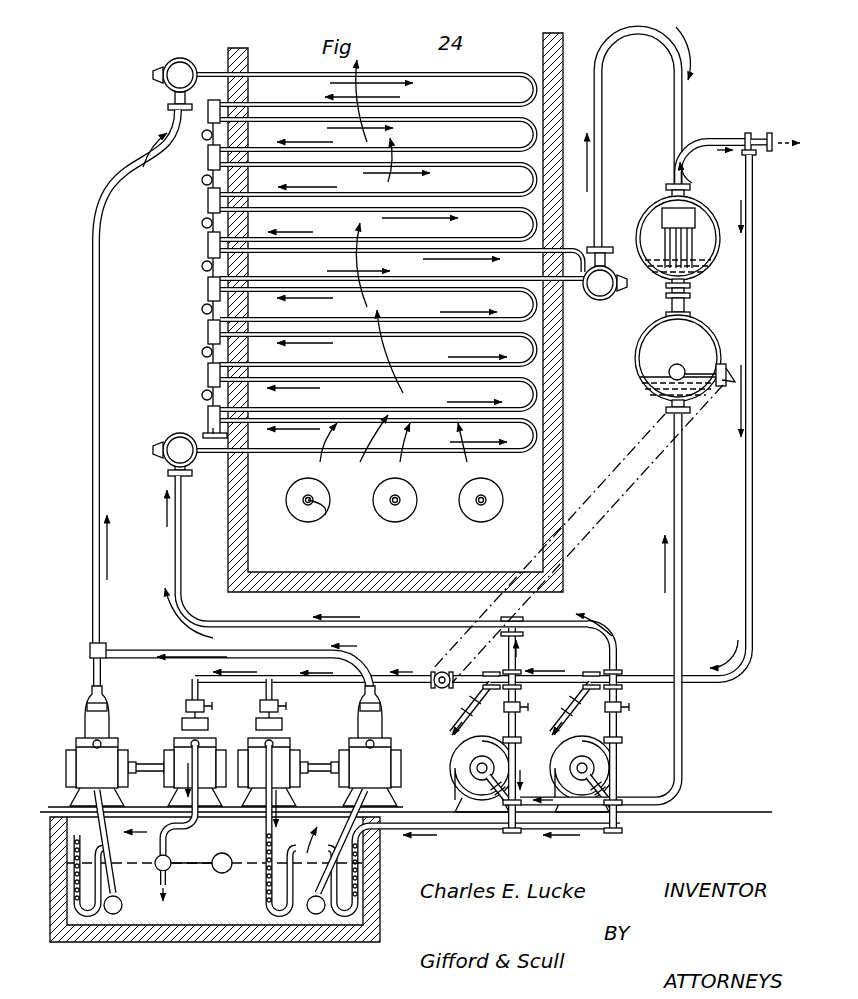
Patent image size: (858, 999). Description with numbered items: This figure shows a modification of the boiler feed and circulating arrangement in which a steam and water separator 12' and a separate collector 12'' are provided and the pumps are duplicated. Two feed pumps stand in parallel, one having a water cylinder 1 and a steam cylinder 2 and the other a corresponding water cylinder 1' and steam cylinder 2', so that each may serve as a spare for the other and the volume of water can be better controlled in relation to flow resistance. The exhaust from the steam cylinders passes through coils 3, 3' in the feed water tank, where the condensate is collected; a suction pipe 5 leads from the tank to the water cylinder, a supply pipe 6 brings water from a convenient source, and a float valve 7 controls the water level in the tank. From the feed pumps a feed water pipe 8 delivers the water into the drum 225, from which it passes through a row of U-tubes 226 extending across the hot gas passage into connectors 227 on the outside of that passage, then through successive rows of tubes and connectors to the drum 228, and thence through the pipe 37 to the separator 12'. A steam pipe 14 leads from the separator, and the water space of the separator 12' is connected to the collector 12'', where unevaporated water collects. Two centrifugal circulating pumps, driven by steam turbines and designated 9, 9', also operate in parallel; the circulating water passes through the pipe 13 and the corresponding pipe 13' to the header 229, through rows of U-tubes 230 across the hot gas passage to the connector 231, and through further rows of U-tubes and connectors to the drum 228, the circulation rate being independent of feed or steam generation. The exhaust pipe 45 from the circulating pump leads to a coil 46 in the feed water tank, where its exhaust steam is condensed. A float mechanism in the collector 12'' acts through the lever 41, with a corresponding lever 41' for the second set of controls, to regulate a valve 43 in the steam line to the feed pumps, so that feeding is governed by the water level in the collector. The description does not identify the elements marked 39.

The water cylinder 1 is at (88, 746).
The water cylinder 1' is at (377, 746).
The steam cylinder 2 is at (182, 742).
The steam cylinder 2' is at (278, 742).
The coil 3 is at (64, 874).
The coil 3' is at (266, 829).
The suction pipe 5 is at (118, 893).
The pipe 6 is at (66, 812).
The float valve 7 is at (195, 862).
The feed water pipe 8 is at (95, 621).
The steam cylinder 9 is at (467, 774).
The steam cylinder 9' is at (594, 772).
The separator 12' is at (669, 248).
The collector 12'' is at (658, 362).
The pipe 13 is at (377, 654).
The pipe 13' is at (613, 723).
The steam pipe 14 is at (751, 448).
The pipe 37 is at (685, 93).
The fan 39 is at (393, 500).
The lever 41 is at (463, 703).
The lever 41' is at (568, 703).
The valve 43 is at (446, 676).
The exhaust pipe 45 is at (506, 832).
The coil 46 is at (700, 353).
The drum 225 is at (170, 64).
The row of U-tubes 226 is at (330, 72).
The connectors 227 is at (207, 128).
The drum 228 is at (598, 302).
The header 229 is at (170, 457).
The rows of U-tubes 230 is at (393, 446).
The connector 231 is at (205, 401).